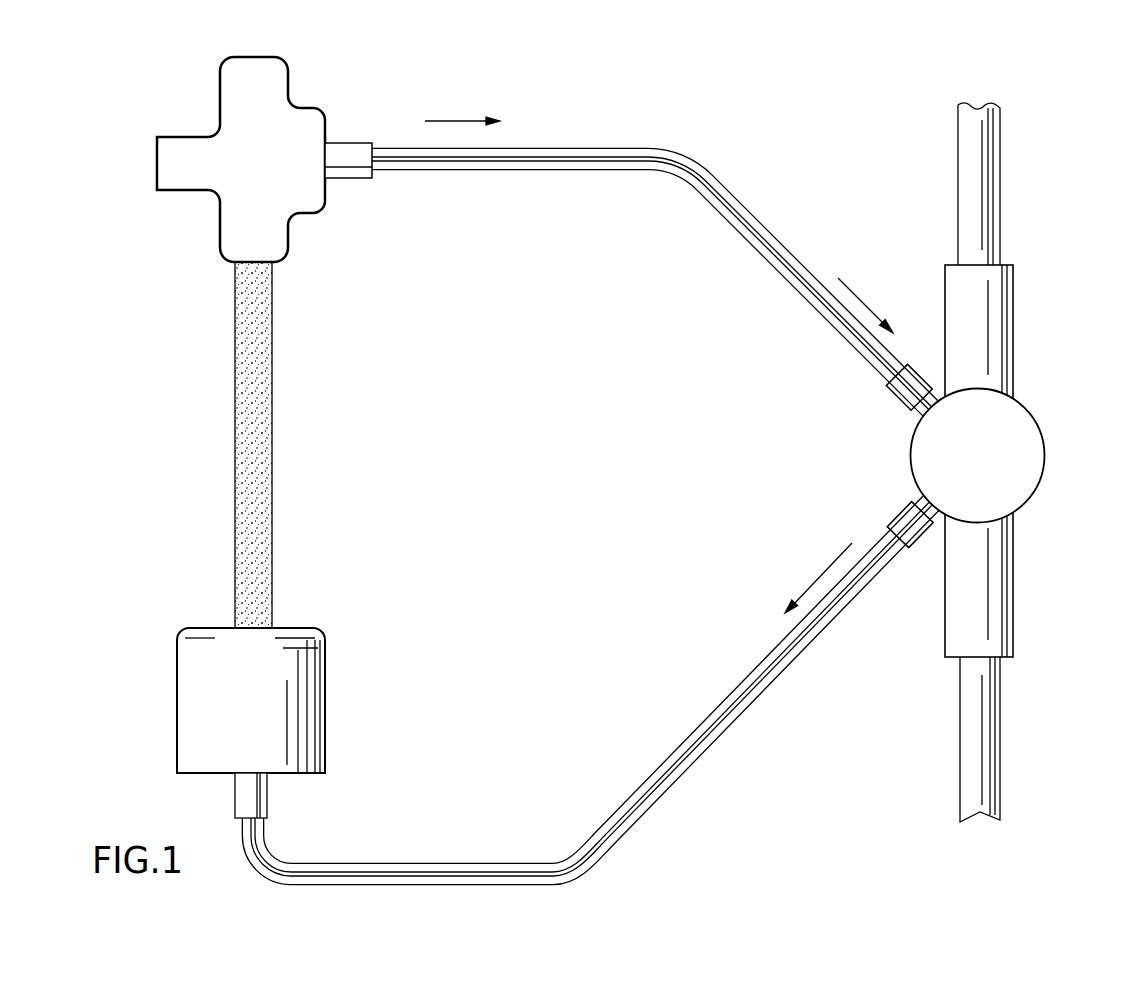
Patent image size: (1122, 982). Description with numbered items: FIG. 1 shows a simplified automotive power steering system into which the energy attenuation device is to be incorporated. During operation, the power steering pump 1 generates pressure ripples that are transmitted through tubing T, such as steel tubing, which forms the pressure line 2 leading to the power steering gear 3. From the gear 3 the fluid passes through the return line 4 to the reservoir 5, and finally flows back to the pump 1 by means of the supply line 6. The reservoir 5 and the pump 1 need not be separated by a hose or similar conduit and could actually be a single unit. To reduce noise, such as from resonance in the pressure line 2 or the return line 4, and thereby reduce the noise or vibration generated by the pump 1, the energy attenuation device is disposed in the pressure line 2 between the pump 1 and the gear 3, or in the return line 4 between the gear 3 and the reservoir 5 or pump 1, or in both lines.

The power steering pump 1 is at (283, 60).
The pressure line 2 is at (707, 170).
The power steering gear 3 is at (1042, 448).
The return line 4 is at (662, 755).
The reservoir 5 is at (325, 718).
The supply line 6 is at (274, 408).
The tubing T is at (594, 493).